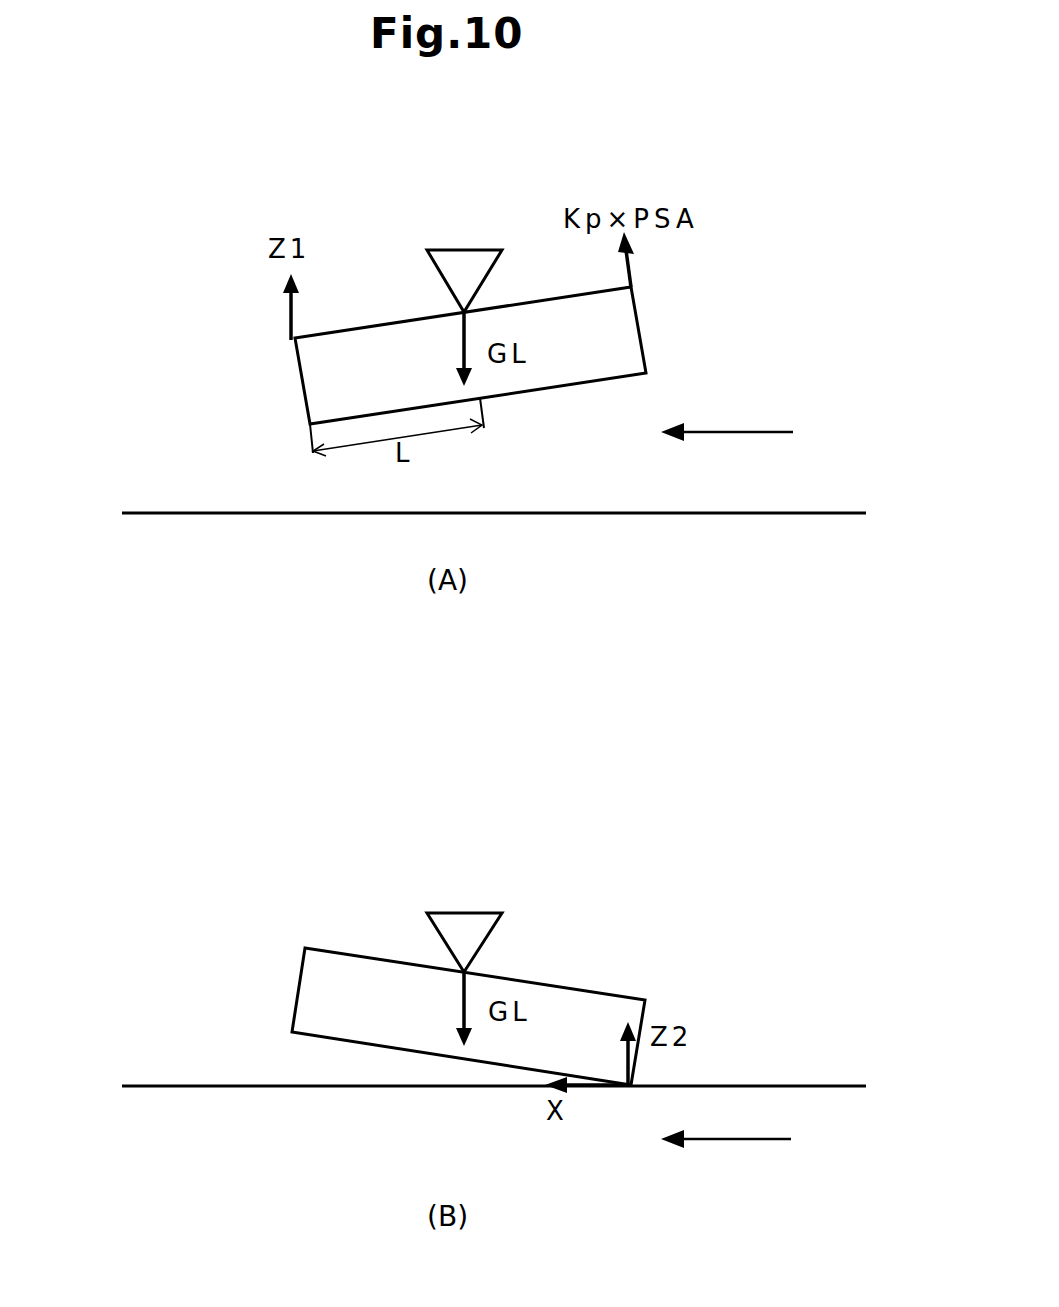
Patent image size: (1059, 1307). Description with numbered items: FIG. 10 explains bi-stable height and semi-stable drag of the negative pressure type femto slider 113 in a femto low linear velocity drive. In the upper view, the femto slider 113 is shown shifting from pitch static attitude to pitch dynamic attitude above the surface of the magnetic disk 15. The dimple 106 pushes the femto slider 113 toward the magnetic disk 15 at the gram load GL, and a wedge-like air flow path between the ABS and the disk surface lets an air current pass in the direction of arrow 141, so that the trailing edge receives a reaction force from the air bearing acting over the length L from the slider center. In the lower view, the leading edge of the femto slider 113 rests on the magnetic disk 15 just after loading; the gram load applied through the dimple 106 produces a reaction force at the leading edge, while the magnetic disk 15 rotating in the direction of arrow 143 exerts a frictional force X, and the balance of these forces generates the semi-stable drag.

The magnetic disk 15 is at (170, 512).
The dimple 106 is at (464, 250).
The femto slider 113 is at (641, 330).
The arrow (air current direction) 141 is at (697, 432).
The arrow (disk rotation direction) 143 is at (692, 1139).